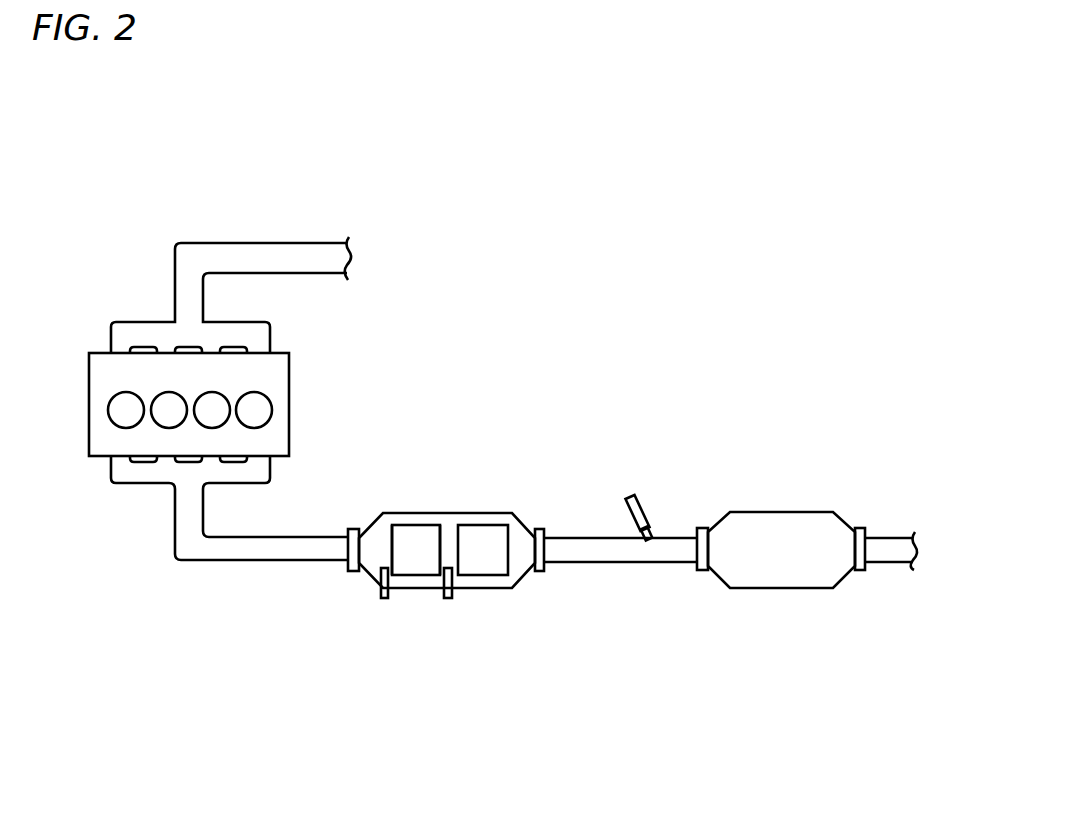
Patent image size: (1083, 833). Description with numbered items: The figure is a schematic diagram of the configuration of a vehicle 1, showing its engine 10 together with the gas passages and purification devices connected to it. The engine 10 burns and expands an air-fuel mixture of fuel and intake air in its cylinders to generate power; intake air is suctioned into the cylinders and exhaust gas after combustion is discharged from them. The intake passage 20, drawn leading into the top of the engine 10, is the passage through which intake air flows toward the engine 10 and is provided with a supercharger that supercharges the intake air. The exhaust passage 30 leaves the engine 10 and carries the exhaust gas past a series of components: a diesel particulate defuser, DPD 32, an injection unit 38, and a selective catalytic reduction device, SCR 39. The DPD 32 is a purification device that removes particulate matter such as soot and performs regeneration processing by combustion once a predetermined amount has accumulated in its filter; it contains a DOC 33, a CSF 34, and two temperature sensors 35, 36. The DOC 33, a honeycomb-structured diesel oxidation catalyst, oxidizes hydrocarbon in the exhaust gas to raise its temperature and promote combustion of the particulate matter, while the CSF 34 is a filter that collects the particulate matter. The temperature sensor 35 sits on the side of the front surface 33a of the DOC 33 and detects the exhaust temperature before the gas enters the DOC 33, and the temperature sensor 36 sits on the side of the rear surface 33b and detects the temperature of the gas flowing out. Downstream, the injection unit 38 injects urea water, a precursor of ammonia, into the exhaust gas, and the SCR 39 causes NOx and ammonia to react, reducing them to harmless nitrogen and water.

The vehicle 1 is at (503, 361).
The engine 10 is at (217, 404).
The intake passage 20 is at (231, 277).
The exhaust passage 30 is at (514, 533).
The diesel particulate defuser (DPD) 32 is at (451, 584).
The DOC (diesel oxidation catalyst) 33 is at (419, 518).
The front surface of the DOC 33a is at (378, 528).
The rear surface of the DOC 33b is at (459, 528).
The CSF 34 is at (483, 518).
The temperature sensor 35 is at (385, 612).
The temperature sensor 36 is at (450, 612).
The injection unit 38 is at (631, 552).
The selective catalytic reduction (SCR) 39 is at (786, 583).